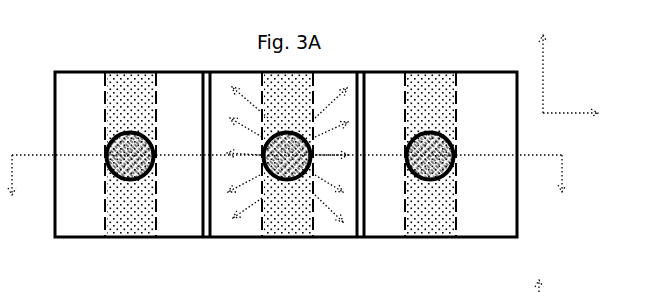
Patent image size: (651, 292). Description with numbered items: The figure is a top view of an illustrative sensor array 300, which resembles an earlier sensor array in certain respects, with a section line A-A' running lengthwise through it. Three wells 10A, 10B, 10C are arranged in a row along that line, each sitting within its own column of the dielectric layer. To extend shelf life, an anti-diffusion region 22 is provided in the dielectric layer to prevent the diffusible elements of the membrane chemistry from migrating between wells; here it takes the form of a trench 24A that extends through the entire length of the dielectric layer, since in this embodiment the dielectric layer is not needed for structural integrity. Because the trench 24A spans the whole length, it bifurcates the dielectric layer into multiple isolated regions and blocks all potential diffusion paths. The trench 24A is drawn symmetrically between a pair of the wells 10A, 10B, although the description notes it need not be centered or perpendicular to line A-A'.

The sensor array 300 is at (72, 32).
The well 10A is at (115, 180).
The well 10B is at (290, 180).
The well 10C is at (448, 177).
The anti-diffusion region 22 is at (207, 208).
The trench 24A is at (261, 179).